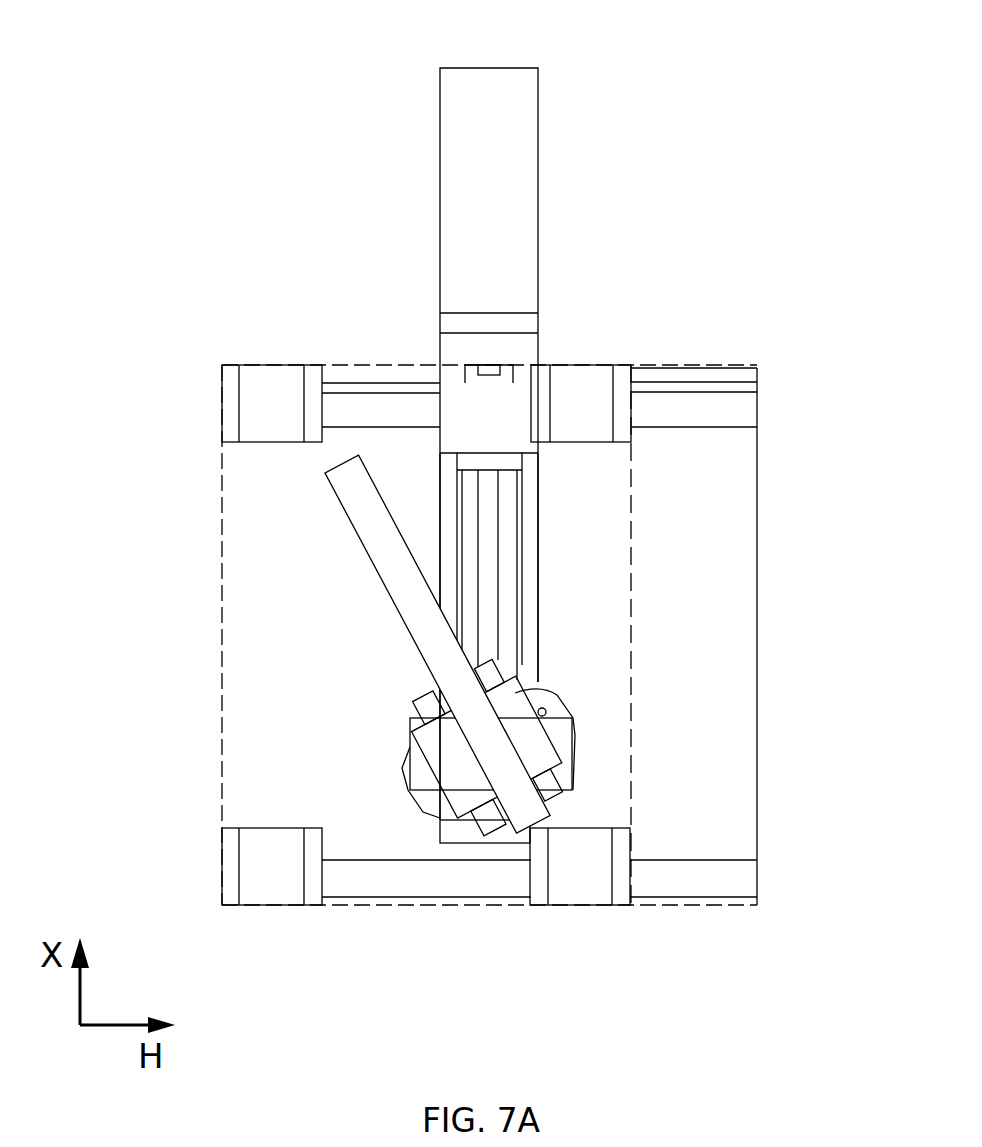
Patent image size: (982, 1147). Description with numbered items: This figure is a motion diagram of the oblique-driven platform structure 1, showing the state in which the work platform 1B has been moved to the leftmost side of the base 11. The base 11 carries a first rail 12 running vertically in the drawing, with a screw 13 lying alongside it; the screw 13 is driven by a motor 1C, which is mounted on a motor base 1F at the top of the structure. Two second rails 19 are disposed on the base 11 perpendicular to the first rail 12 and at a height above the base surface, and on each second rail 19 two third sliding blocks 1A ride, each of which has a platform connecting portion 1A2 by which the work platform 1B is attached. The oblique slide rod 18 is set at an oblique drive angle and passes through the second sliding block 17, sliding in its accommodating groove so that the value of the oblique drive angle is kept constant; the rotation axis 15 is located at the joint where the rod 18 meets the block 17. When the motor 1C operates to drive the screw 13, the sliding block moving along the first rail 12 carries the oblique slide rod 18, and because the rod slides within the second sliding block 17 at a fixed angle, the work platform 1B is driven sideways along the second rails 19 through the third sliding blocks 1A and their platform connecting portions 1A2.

The oblique-driven platform structure 1 is at (208, 35).
The third sliding block 1A is at (623, 372).
The platform connecting portion 1A2 is at (280, 387).
The work platform 1B is at (631, 543).
The motor 1C is at (533, 160).
The motor base 1F is at (458, 443).
The base 11 is at (752, 726).
The first rail 12 is at (538, 497).
The screw 13 is at (490, 540).
The rotation axis 15 is at (542, 698).
The second sliding block 17 is at (433, 705).
The oblique slide rod 18 is at (347, 492).
The second rail 19 is at (753, 887).